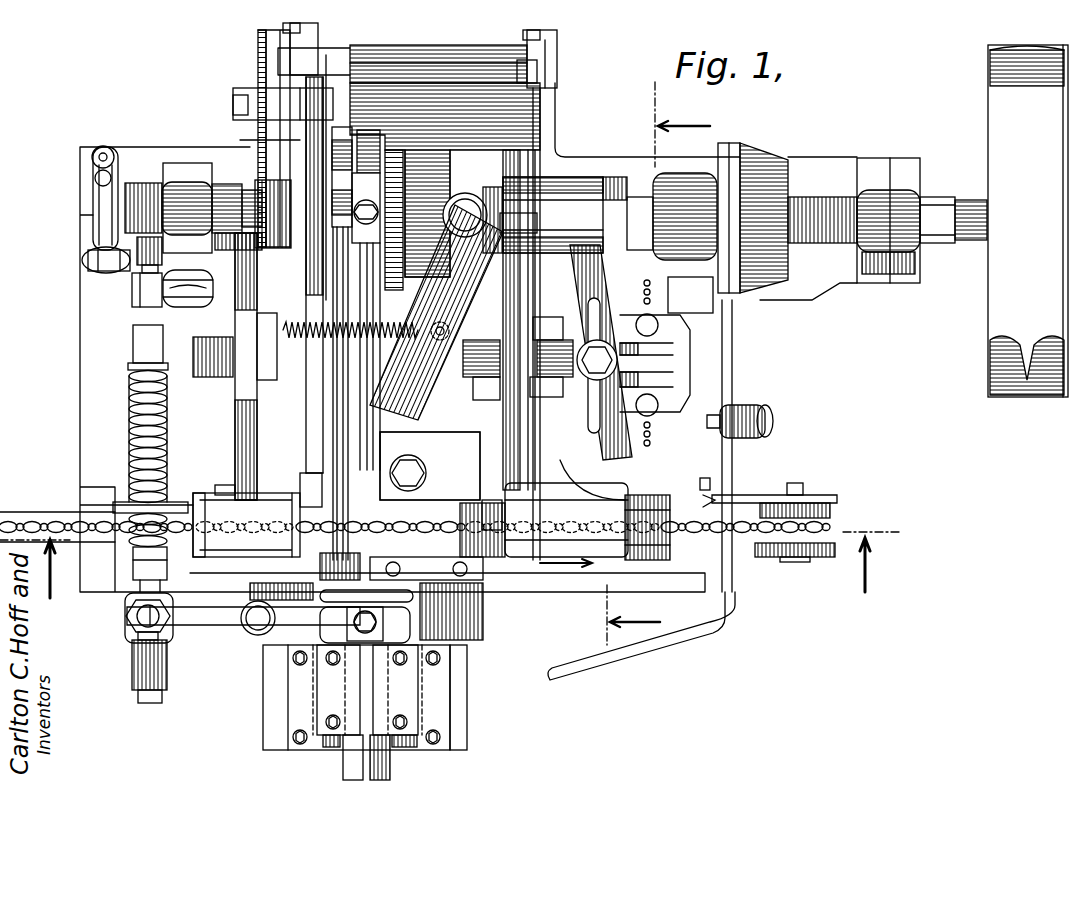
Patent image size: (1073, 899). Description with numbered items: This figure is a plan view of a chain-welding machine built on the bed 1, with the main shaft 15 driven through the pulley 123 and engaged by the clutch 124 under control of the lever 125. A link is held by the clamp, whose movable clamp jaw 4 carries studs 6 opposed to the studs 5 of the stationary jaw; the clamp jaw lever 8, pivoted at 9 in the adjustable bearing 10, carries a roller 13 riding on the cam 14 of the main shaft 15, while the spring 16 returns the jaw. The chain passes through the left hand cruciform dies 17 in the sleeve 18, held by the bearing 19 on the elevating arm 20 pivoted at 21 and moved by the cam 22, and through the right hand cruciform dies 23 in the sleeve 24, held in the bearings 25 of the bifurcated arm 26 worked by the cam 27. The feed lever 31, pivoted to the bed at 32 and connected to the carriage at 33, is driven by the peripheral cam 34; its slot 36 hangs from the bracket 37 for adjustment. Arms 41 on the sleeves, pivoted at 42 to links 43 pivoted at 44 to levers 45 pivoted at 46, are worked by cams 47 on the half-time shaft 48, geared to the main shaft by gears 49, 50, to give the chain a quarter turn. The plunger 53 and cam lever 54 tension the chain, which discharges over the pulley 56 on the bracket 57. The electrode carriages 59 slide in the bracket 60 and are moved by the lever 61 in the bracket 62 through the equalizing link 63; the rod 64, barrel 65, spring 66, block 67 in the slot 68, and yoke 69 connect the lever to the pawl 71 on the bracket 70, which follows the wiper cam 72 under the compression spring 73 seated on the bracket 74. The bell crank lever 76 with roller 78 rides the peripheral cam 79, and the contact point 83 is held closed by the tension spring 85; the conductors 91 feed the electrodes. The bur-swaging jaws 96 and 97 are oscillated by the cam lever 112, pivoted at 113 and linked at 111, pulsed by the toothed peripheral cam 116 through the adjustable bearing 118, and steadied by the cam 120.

The bed 1 is at (80, 378).
The movable clamp jaw 4 is at (450, 565).
The upstanding studs 5 is at (350, 470).
The studs 6 is at (545, 363).
The clamp jaw lever 8 is at (440, 300).
The pivot 9 is at (425, 472).
The bearing 10 is at (475, 442).
The roller 13 is at (462, 195).
The cam 14 is at (430, 172).
The main shaft 15 is at (970, 200).
The spring 16 is at (440, 582).
The left hand cruciform dies 17 is at (197, 495).
The sleeve 18 is at (210, 495).
The bearing 19 is at (227, 500).
The elevating arm 20 is at (240, 414).
The pivot 21 is at (250, 348).
The cam 22 is at (258, 175).
The right hand cruciform dies 23 is at (713, 483).
The sleeve 24 is at (544, 518).
The bearings 25 is at (495, 500).
The bifurcated arm 26 is at (537, 424).
The cam 27 is at (494, 186).
The lever 31 is at (600, 288).
The pivot 32 is at (608, 358).
The pivotal and slidable connection 33 is at (615, 490).
The peripheral cam 34 is at (578, 180).
The slot 36 is at (598, 305).
The bracket 37 is at (668, 374).
The arms 41 is at (306, 488).
The pivots 42 is at (318, 508).
The links 43 is at (355, 95).
The pivots 44 is at (320, 30).
The levers 45 is at (560, 56).
The pivots 46 is at (462, 62).
The cams 47 is at (280, 96).
The half-time shaft 48 is at (324, 125).
The gear 49 is at (262, 58).
The gear 50 is at (272, 248).
The plunger 53 is at (38, 538).
The cam lever 54 is at (45, 515).
The pulley 56 is at (835, 520).
The bracket 57 is at (755, 496).
The carriages 59 is at (400, 712).
The bracket 60 is at (468, 716).
The lever 61 is at (243, 619).
The bracket 62 is at (253, 640).
The equalizing link 63 is at (395, 622).
The rod 64 is at (129, 392).
The barrel 65 is at (167, 678).
The spring 66 is at (160, 645).
The block 67 is at (126, 627).
The slot 68 is at (135, 640).
The yoke 69 is at (133, 342).
The bracket 70 is at (188, 288).
The pawl 71 is at (132, 300).
The wiper cam 72 is at (143, 218).
The compression spring 73 is at (129, 420).
The bracket 74 is at (125, 505).
The bell crank lever 76 is at (95, 258).
The roller 78 is at (130, 283).
The peripheral cam 79 is at (122, 160).
The contact point 83 is at (92, 162).
The tension spring 85 is at (93, 215).
The conductors 91 is at (445, 600).
The jaw 96 is at (372, 430).
The jaw 97 is at (410, 338).
The pivot 111 is at (370, 320).
The cam lever 112 is at (269, 133).
The pivot 113 is at (353, 169).
The peripheral cam 116 is at (375, 145).
The adjustable bearing 118 is at (380, 210).
The cam 120 is at (393, 152).
The pulley 123 is at (987, 60).
The clutch 124 is at (762, 150).
The lever 125 is at (735, 447).